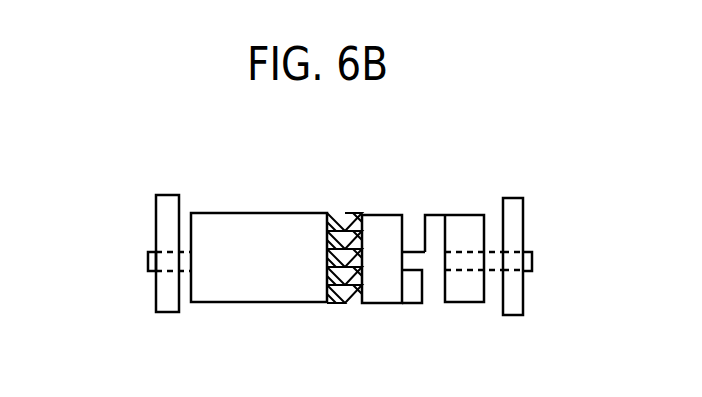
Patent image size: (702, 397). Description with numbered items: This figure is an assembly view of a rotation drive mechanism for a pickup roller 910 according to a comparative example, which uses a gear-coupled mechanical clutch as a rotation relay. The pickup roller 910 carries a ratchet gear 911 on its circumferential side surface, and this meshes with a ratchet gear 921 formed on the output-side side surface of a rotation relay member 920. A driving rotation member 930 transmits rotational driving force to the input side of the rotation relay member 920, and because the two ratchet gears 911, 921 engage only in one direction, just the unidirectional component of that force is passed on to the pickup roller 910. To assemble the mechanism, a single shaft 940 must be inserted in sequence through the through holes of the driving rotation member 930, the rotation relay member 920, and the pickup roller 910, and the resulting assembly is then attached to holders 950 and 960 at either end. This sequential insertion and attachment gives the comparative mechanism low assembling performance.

The pickup roller 910 is at (249, 213).
The ratchet gear 911 is at (333, 303).
The rotation relay member 920 is at (379, 214).
The ratchet gear 921 is at (357, 301).
The driving rotation member 930 is at (464, 214).
The shaft 940 is at (148, 261).
The holder 950 is at (163, 313).
The holder 960 is at (512, 316).